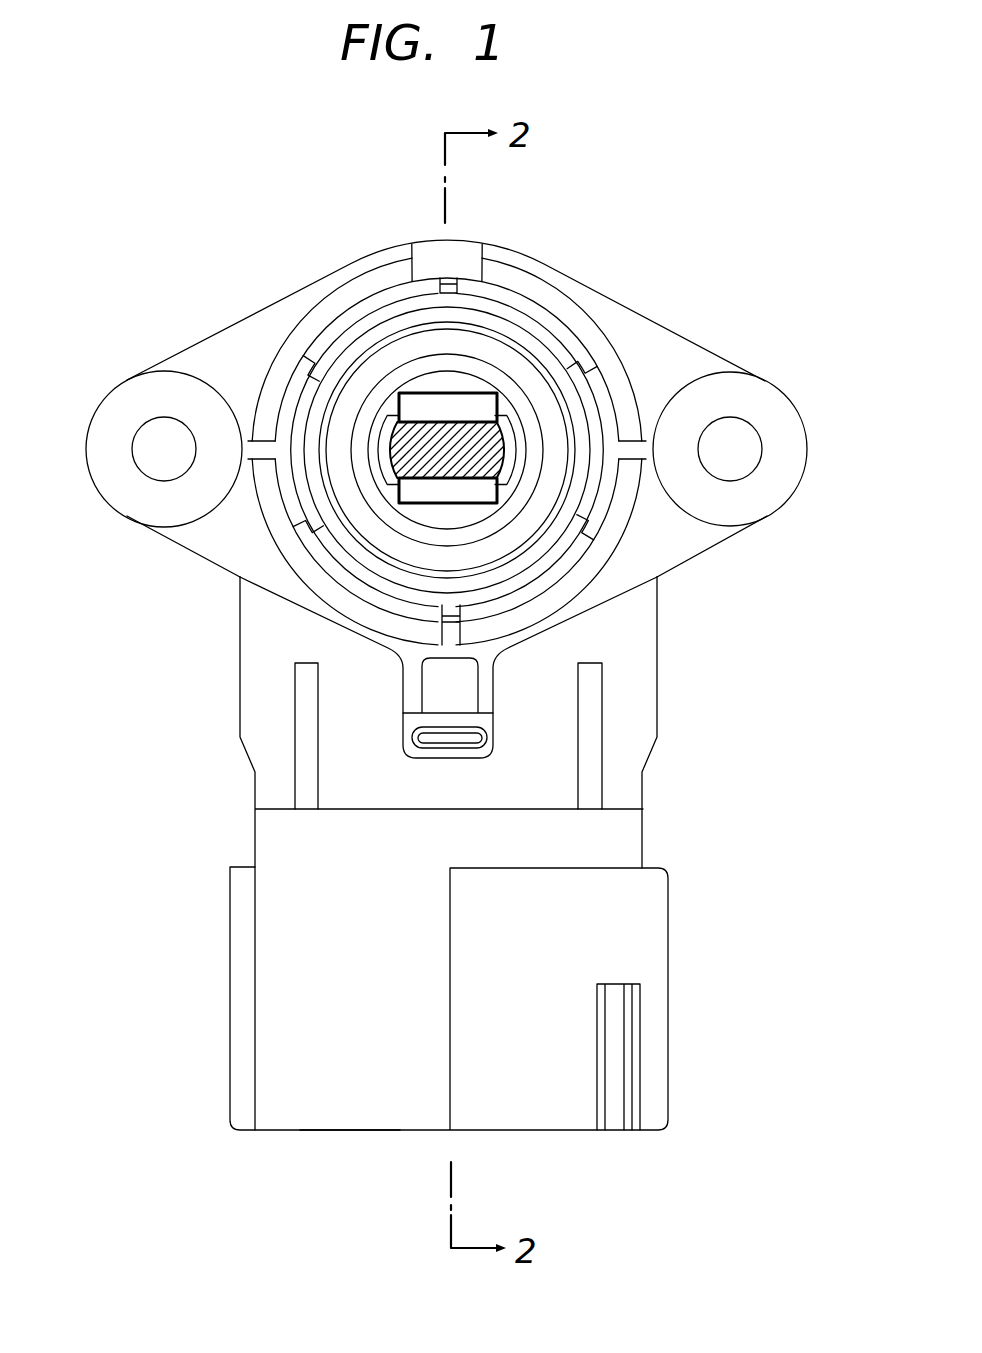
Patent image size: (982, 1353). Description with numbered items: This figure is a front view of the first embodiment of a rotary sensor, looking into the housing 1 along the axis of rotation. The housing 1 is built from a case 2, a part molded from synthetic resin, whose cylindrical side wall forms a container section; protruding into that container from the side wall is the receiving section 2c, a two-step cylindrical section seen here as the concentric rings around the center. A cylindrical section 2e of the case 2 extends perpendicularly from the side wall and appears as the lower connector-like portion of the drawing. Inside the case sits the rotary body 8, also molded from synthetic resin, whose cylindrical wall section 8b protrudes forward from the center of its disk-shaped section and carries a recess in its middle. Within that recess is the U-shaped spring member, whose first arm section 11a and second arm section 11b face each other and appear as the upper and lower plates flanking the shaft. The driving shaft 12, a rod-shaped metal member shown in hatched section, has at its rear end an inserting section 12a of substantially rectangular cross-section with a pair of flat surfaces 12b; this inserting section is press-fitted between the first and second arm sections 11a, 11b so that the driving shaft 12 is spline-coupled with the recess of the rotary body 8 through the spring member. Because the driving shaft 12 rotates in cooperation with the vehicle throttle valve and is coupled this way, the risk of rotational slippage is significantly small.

The housing 1 is at (212, 1073).
The case 2 is at (660, 312).
The receiving section 2c is at (467, 538).
The cylindrical section 2e is at (349, 1110).
The rotary body 8 is at (388, 480).
The cylindrical wall section 8b is at (392, 462).
The first arm section 11a is at (423, 393).
The second arm section 11b is at (480, 510).
The driving shaft 12 is at (499, 417).
The inserting section 12a is at (504, 490).
The flat surfaces 12b is at (472, 425).